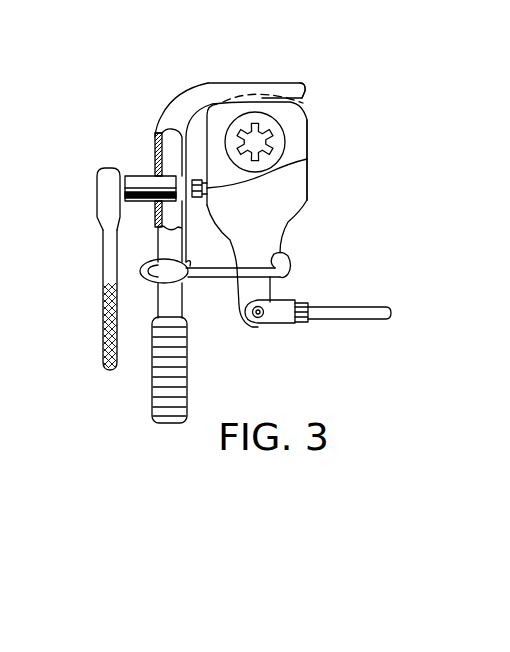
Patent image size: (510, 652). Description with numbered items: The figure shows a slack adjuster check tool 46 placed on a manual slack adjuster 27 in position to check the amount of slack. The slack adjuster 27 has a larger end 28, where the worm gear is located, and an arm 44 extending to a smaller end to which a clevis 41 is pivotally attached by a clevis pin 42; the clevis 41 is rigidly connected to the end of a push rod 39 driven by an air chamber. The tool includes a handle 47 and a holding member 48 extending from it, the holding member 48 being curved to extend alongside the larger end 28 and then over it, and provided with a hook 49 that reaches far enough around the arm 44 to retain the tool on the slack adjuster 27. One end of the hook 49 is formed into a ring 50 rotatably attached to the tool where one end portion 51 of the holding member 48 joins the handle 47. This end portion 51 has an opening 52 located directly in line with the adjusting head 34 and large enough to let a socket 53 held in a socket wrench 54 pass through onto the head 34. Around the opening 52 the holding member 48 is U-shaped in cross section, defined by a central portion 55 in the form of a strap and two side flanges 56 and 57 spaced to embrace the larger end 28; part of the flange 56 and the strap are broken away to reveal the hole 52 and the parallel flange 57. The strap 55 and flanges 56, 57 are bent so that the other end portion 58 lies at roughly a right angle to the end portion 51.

The slack adjuster 27 is at (320, 191).
The larger end 28 is at (303, 120).
The adjusting head 34 is at (313, 157).
The push rod 39 is at (347, 307).
The clevis 41 is at (286, 321).
The clevis pin 42 is at (258, 319).
The arm 44 is at (296, 226).
The slack adjuster check tool 46 is at (192, 335).
The handle 47 is at (99, 352).
The holding member 48 is at (148, 236).
The hook 49 is at (290, 266).
The ring 50 is at (140, 267).
The end portion 51 is at (158, 298).
The opening 52 is at (153, 170).
The socket 53 is at (127, 177).
The socket wrench 54 is at (97, 199).
The central portion 55 is at (153, 147).
The side flange 56 is at (192, 103).
The side flange 57 is at (172, 145).
The other end portion 58 is at (283, 82).